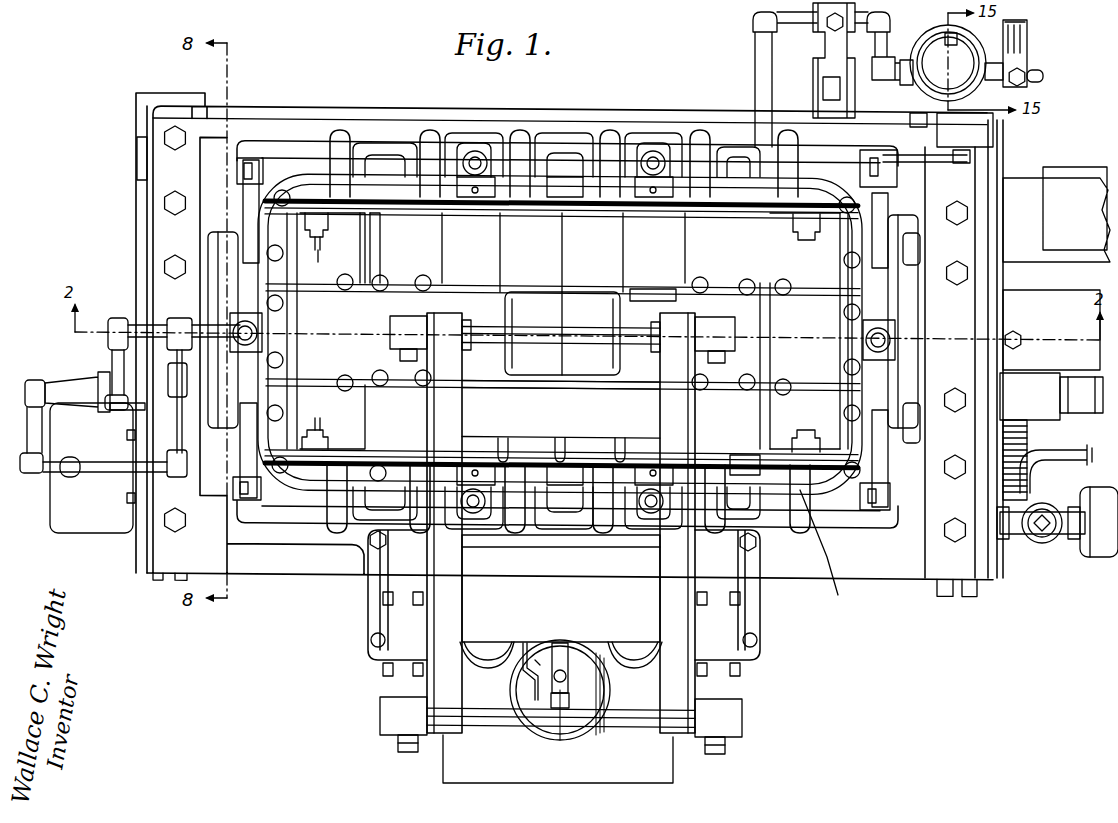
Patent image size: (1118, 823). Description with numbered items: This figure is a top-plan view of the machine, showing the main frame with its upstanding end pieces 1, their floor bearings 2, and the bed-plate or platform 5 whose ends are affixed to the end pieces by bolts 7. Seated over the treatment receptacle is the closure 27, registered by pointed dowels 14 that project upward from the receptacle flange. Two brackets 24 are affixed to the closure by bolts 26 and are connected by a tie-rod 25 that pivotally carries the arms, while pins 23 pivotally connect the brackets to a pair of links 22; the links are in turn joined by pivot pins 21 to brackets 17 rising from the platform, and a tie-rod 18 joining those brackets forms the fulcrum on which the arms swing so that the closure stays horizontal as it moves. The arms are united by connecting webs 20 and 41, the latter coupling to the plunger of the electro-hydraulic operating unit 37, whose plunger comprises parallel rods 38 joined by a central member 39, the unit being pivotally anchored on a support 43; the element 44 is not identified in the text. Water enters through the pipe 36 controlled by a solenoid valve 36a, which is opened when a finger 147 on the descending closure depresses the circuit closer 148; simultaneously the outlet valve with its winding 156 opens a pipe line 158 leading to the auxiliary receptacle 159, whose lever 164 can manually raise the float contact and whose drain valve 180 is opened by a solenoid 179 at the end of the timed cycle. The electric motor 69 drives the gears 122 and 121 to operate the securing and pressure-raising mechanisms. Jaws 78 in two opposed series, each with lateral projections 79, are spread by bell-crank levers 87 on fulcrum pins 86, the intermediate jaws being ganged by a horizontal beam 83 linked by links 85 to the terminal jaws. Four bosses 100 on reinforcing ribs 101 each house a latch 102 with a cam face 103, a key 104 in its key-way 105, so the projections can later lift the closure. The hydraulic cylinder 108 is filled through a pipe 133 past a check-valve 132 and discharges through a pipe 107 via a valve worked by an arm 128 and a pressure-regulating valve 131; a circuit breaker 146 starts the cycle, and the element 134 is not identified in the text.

The end pieces 1 is at (153, 113).
The floor bearings 2 is at (143, 100).
The bed-plate or platform 5 is at (240, 118).
The bolts 7 is at (175, 150).
The pointed dowels 14 is at (476, 160).
The brackets 17 is at (368, 640).
The tie-rod 18 is at (628, 710).
The connecting web 20 is at (561, 421).
The pivot pins 21 is at (380, 716).
The links 22 is at (450, 404).
The pins 23 is at (385, 289).
The brackets 24 is at (562, 333).
The tie-rod 25 is at (528, 333).
The bolts 26 is at (412, 390).
The closure 27 is at (562, 334).
The pipe 36 is at (1022, 540).
The solenoid valve 36a is at (1085, 557).
The electro-hydraulic operating unit 37 is at (590, 752).
The parallel rods 38 is at (537, 655).
The central member 39 is at (570, 650).
The connecting web 41 is at (561, 588).
The support 43 is at (650, 773).
The ears 44 is at (633, 650).
The electric motor 69 is at (1051, 330).
The jaws 78 is at (605, 140).
The lateral projections 79 is at (492, 205).
The horizontal beam 83 is at (272, 140).
The links 85 is at (237, 162).
The fulcrum pin 86 is at (105, 318).
The bell-crank levers 87 is at (920, 248).
The bosses 100 is at (330, 238).
The reinforcing ribs 101 is at (376, 215).
The latch 102 is at (313, 180).
The inclined cam face 103 is at (833, 551).
The key 104 is at (320, 250).
The key-way 105 is at (300, 180).
The pipe 107 is at (27, 413).
The hydraulic cylinder 108 is at (85, 523).
The gear 121 is at (1045, 462).
The gear 122 is at (1022, 425).
The arm 128 is at (112, 410).
The pressure-regulating valve 131 is at (82, 378).
The check-valve 132 is at (172, 398).
The pipe 133 is at (105, 472).
The strip 134 is at (653, 288).
The circuit breaker 146 is at (137, 151).
The finger 147 is at (930, 162).
The circuit closer 148 is at (937, 147).
The winding 156 is at (813, 78).
The pipe line 158 is at (755, 55).
The auxiliary receptacle 159 is at (936, 33).
The manually operable lever 164 is at (957, 36).
The solenoid 179 is at (1020, 22).
The valve 180 is at (1027, 60).